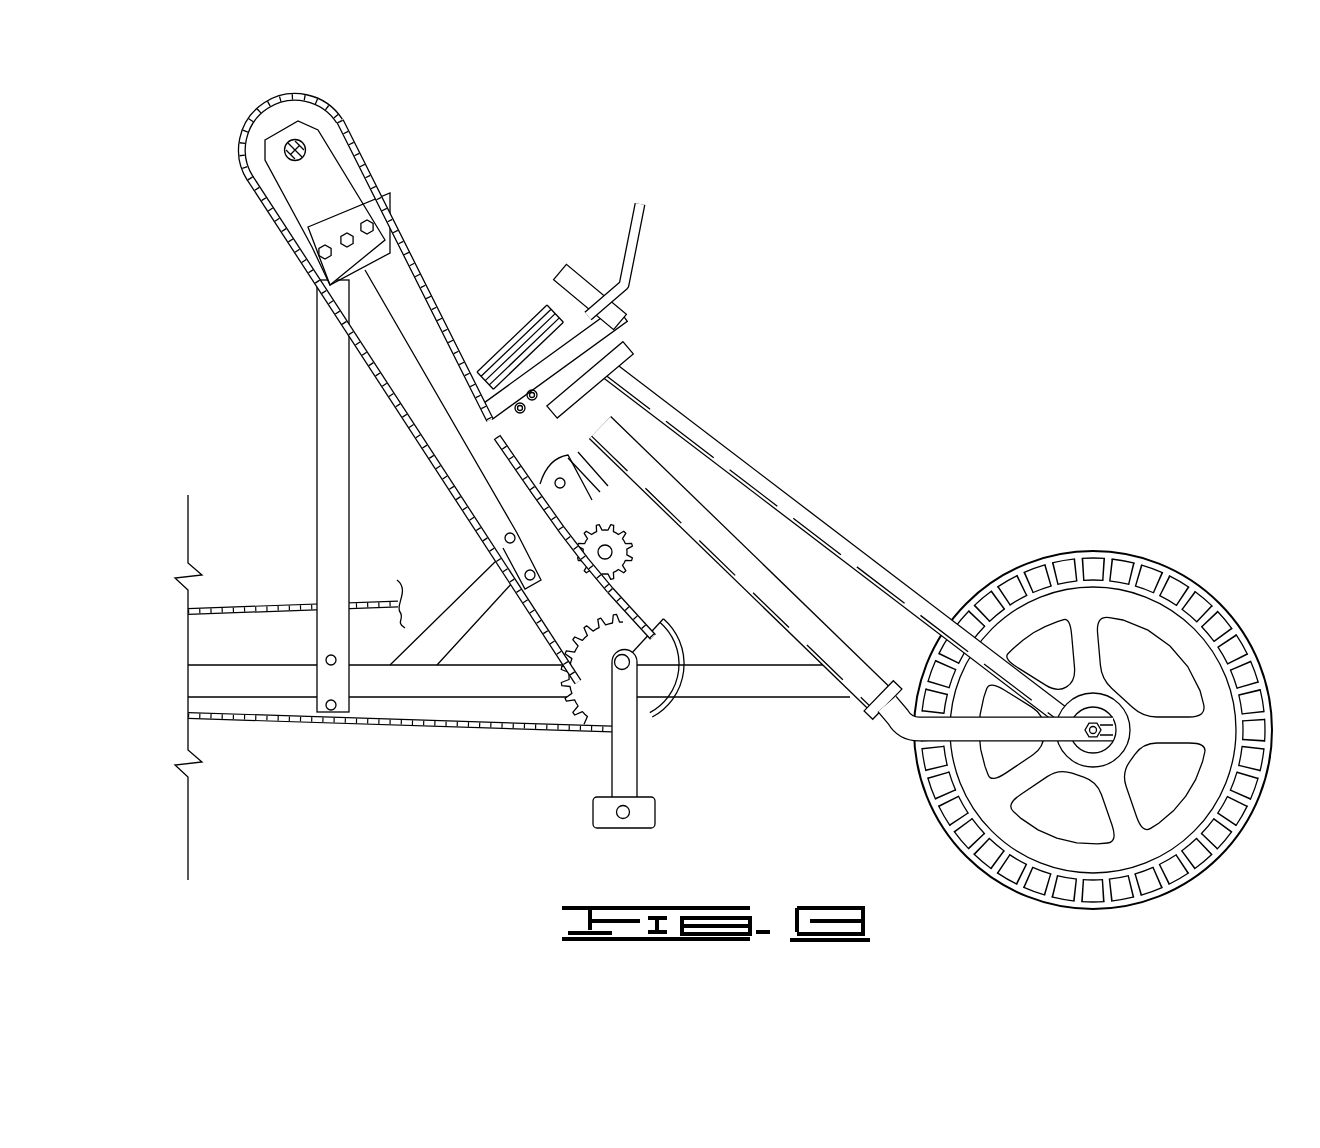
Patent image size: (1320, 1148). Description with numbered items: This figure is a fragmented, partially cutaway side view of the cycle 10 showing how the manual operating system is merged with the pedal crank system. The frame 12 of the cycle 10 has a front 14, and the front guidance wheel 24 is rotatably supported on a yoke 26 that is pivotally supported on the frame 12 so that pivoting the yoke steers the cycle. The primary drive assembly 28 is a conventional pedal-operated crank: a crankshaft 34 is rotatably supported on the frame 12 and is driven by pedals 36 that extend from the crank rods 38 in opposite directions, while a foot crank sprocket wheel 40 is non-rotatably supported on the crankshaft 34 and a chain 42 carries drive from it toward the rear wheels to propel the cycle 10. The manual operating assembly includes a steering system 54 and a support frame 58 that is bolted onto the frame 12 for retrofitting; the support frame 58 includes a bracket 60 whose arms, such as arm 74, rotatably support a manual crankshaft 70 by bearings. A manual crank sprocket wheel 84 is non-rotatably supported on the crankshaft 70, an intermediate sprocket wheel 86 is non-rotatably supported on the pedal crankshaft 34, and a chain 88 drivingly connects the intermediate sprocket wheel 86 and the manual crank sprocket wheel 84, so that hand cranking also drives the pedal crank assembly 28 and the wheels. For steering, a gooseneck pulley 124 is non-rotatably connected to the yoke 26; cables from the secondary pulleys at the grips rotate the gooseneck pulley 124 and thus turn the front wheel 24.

The cycle 10 is at (838, 390).
The frame 12 is at (786, 706).
The front 14 is at (878, 550).
The front guidance wheel 24 is at (1210, 598).
The yoke 26 is at (962, 720).
The primary drive assembly 28 is at (596, 766).
The crankshaft 34 is at (630, 661).
The pedals 36 is at (650, 811).
The crank rods 38 is at (628, 756).
The foot crank sprocket wheel 40 is at (650, 695).
The chain 42 is at (300, 722).
The steering system 54 is at (565, 330).
The support frame 58 is at (318, 397).
The bracket 60 is at (323, 198).
The crankshaft 70 is at (288, 144).
The arm 74 is at (297, 178).
The manual crank sprocket wheel 84 is at (323, 115).
The intermediate sprocket wheel 86 is at (633, 627).
The chain 88 is at (400, 222).
The gooseneck pulley 124 is at (518, 337).